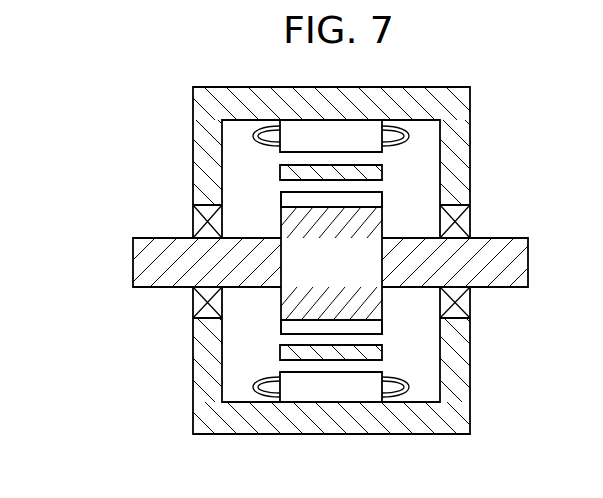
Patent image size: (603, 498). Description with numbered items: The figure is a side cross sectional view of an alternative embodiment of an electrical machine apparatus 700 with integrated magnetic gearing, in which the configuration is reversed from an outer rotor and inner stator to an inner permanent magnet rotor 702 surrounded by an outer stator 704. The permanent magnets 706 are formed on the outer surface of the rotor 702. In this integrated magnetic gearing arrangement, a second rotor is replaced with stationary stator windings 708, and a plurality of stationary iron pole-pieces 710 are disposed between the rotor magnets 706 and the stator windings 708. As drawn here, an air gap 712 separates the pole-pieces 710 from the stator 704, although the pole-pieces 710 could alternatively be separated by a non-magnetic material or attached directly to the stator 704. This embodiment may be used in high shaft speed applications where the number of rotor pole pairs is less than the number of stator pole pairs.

The electrical machine apparatus 700 is at (125, 142).
The inner permanent magnet rotor 702 is at (343, 268).
The outer stator 704 is at (362, 133).
The permanent magnets 706 is at (283, 194).
The stationary stator windings 708 is at (407, 138).
The stationary iron pole-pieces 710 is at (293, 168).
The air gap 712 is at (362, 365).